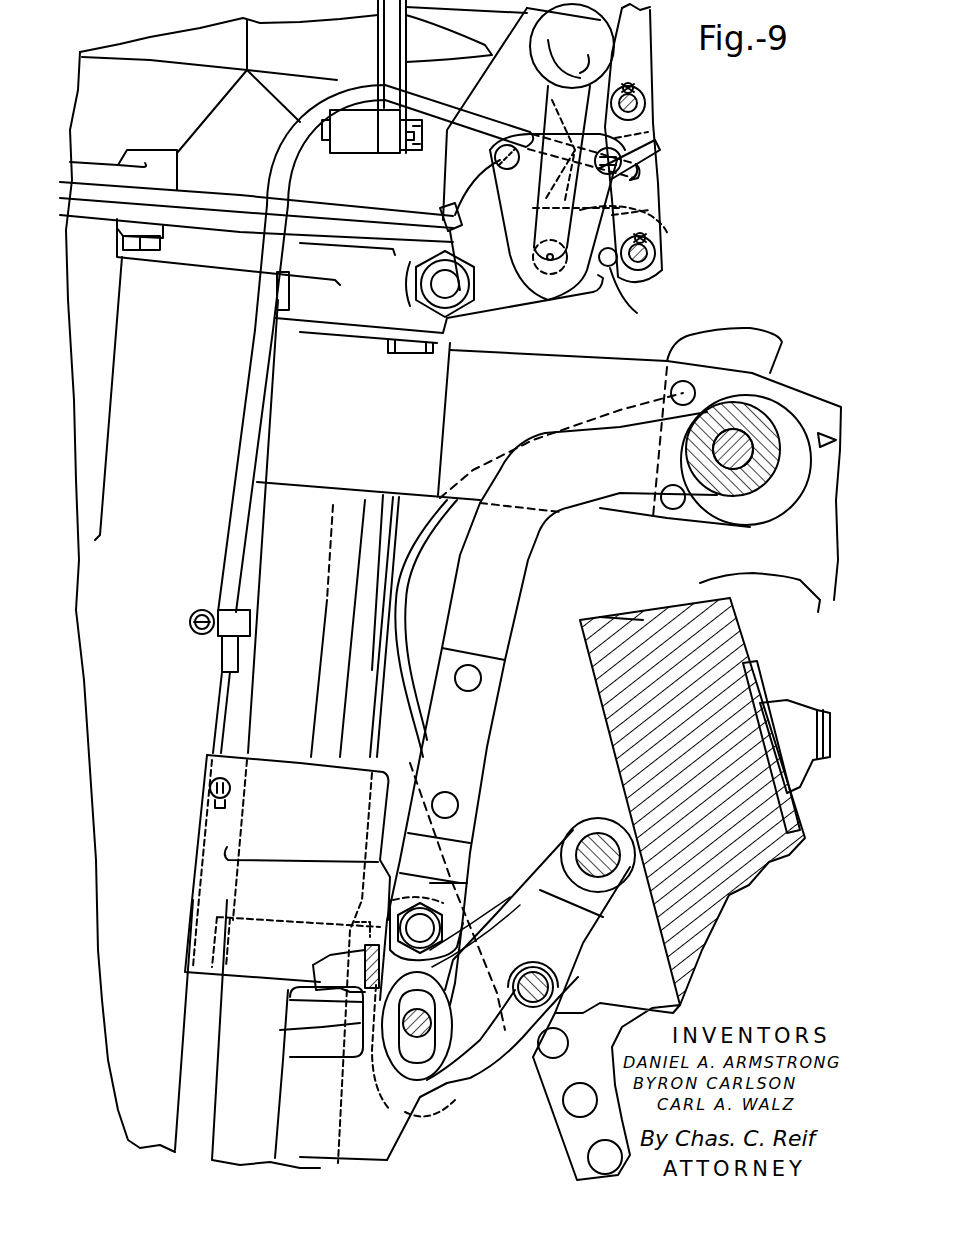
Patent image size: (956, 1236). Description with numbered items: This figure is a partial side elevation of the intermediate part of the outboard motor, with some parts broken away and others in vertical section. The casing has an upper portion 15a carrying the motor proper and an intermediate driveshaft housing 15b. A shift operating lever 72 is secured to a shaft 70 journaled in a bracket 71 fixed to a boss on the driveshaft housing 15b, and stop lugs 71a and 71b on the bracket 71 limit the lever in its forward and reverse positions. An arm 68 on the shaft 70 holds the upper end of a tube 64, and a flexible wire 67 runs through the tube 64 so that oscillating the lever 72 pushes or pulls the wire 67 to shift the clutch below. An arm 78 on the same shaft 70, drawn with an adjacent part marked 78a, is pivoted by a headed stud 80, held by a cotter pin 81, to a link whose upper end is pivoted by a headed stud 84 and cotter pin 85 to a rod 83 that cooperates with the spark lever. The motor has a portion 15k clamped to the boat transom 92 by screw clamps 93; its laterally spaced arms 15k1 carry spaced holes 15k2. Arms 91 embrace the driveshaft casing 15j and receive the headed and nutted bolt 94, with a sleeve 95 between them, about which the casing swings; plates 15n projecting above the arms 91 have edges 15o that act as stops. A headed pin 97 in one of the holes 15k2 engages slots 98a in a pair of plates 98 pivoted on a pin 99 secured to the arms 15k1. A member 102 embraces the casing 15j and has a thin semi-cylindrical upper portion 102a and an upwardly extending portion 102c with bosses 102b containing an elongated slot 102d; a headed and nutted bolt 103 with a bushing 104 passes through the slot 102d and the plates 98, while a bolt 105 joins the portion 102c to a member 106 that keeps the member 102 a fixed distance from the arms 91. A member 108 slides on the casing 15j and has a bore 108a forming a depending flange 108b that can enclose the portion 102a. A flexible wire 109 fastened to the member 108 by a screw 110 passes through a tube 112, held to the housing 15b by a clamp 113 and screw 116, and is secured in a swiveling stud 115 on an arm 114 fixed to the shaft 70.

The upper portion 15a is at (120, 50).
The driveshaft housing 15b is at (108, 903).
The driveshaft casing 15j is at (280, 527).
The portion clamped to boat transom 15k is at (820, 605).
The laterally spaced arms 15k1 is at (540, 1103).
The spaced holes 15k2 is at (560, 1033).
The laterally spaced plates 15n is at (724, 340).
The stop edges 15o is at (783, 350).
The tube 64 is at (443, 214).
The flexible wire 67 is at (478, 200).
The arm 68 is at (495, 158).
The shaft 70 is at (548, 300).
The bracket 71 is at (499, 300).
The stop lug 71a is at (608, 303).
The stop lug 71b is at (651, 220).
The shift operating lever 72 is at (550, 90).
The arm 78 is at (612, 268).
The pin tab 78a is at (649, 300).
The headed stud 80 is at (656, 256).
The cotter pin 81 is at (648, 240).
The rod 83 is at (650, 72).
The headed stud 84 is at (646, 104).
The cotter pin 85 is at (650, 88).
The arms 91 is at (280, 392).
The boat transom 92 is at (725, 630).
The screw clamps 93 is at (817, 708).
The headed and nutted bolt 94 is at (742, 445).
The sleeve 95 is at (757, 490).
The headed pin 97 is at (553, 985).
The spaced plates 98 is at (585, 944).
The slots 98a is at (475, 1070).
The bolt or pin 99 is at (597, 840).
The member 102 is at (290, 1130).
The upper portion 102a is at (305, 1030).
The laterally projecting bosses 102b is at (305, 1004).
The upwardly extending portion 102c is at (480, 946).
The elongated slot 102d is at (423, 1075).
The headed and nutted bolt 103 is at (475, 963).
The bushing 104 is at (440, 1022).
The bolt 105 is at (463, 897).
The member 106 is at (520, 575).
The member 108 is at (210, 820).
The bore 108a is at (320, 967).
The depending flange 108b is at (360, 948).
The flexible wire 109 is at (222, 690).
The screw 110 is at (212, 780).
The tube 112 is at (247, 485).
The clamp 113 is at (216, 608).
The arm 114 is at (623, 190).
The swiveling stud 115 is at (622, 153).
The screw 116 is at (190, 622).